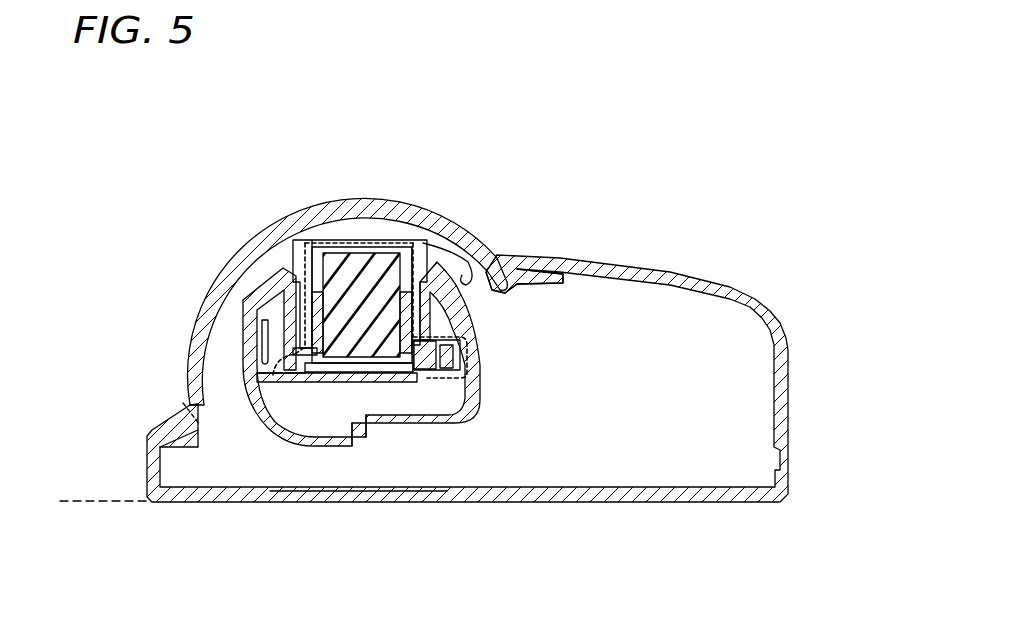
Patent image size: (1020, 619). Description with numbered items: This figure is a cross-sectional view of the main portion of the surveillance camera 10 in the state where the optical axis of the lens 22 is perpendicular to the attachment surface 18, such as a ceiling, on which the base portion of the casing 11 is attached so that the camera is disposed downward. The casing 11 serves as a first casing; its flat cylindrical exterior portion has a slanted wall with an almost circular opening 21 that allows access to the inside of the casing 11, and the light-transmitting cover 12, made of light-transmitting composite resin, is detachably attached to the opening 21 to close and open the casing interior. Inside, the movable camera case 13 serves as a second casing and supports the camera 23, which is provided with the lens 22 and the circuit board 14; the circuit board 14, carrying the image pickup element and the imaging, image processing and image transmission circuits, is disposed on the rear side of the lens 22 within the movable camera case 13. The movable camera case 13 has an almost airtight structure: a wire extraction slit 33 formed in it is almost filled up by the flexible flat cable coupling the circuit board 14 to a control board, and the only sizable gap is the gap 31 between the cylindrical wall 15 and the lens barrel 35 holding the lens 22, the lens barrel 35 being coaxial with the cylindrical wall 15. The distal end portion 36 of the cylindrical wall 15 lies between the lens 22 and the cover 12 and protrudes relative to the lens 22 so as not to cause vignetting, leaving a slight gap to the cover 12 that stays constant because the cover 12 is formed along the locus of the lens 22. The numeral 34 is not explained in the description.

The surveillance camera 10 is at (607, 160).
The casing 11 is at (670, 264).
The light-transmitting cover 12 is at (207, 303).
The movable camera case 13 is at (486, 406).
The circuit board 14 is at (298, 383).
The cylindrical wall 15 is at (285, 256).
The attachment surface 18 is at (68, 500).
The opening 21 is at (510, 262).
The lens 22 is at (346, 246).
The camera 23 is at (383, 386).
The gap 31 is at (467, 243).
The wire extraction slit 33 is at (365, 437).
The right arm 34 is at (418, 230).
The lens barrel 35 is at (292, 262).
The distal end portion 36 is at (297, 230).